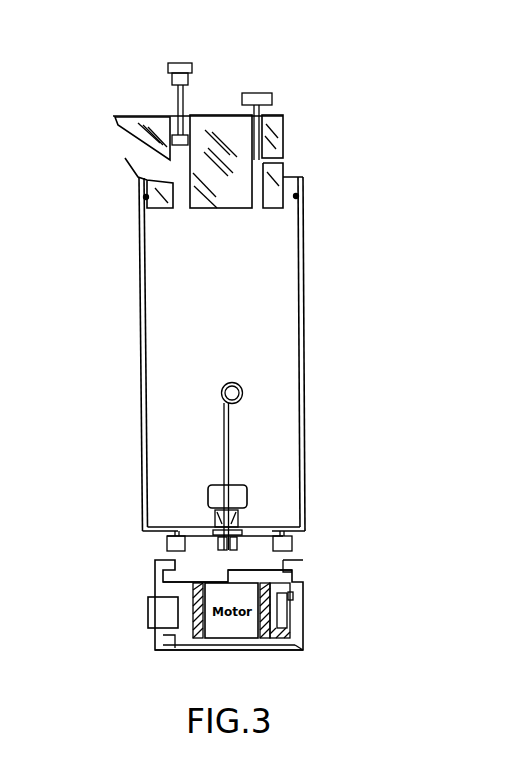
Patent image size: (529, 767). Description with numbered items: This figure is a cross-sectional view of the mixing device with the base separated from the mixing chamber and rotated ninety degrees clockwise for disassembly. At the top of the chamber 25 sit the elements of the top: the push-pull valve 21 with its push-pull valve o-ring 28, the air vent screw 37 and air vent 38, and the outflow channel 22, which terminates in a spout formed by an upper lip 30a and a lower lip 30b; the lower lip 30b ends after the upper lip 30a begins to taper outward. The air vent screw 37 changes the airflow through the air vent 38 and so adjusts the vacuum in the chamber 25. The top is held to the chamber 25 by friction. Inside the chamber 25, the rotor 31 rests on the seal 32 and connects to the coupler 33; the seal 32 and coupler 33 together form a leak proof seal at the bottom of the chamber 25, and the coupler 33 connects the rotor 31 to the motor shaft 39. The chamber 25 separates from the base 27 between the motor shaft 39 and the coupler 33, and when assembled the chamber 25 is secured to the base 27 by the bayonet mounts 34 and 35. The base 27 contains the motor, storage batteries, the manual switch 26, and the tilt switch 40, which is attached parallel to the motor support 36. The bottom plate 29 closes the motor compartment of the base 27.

The push-pull valve 21 is at (168, 73).
The outflow channel 22 is at (147, 160).
The chamber 25 is at (308, 358).
The manual switch 26 is at (148, 618).
The base 27 is at (307, 622).
The push-pull valve o-ring 28 is at (172, 137).
The bottom plate 29 is at (215, 655).
The upper lip 30a is at (115, 119).
The lower lip 30b is at (125, 158).
The rotor 31 is at (222, 450).
The seal 32 is at (220, 528).
The coupler 33 is at (220, 538).
The bayonet mount 34 is at (165, 549).
The bayonet mount 35 is at (153, 576).
The motor support 36 is at (303, 650).
The air vent screw 37 is at (272, 93).
The air vent 38 is at (283, 158).
The motor shaft 39 is at (230, 580).
The tilt switch 40 is at (290, 610).